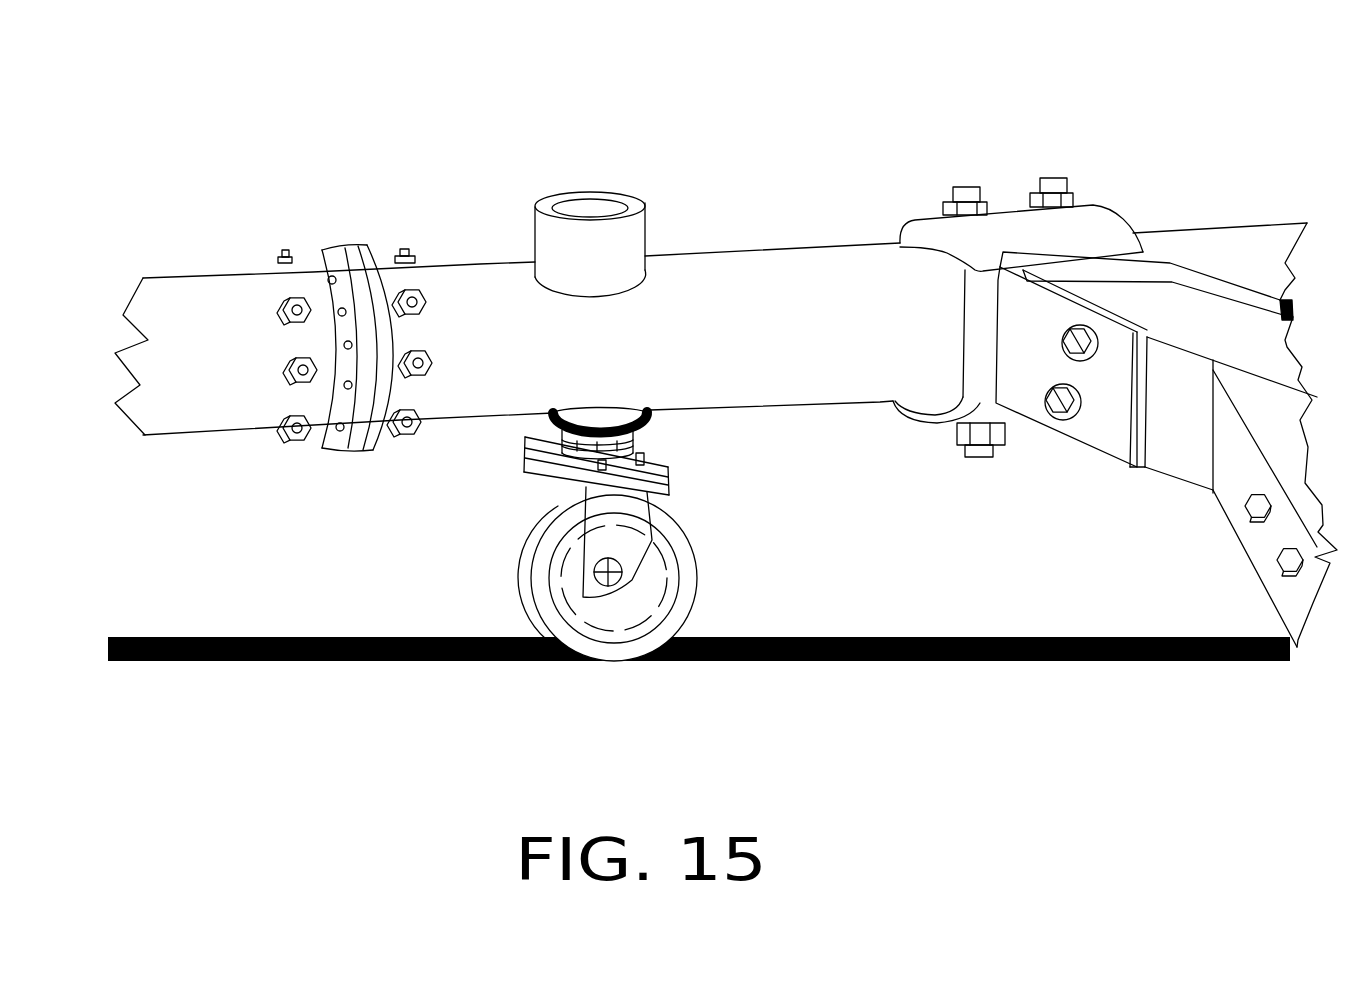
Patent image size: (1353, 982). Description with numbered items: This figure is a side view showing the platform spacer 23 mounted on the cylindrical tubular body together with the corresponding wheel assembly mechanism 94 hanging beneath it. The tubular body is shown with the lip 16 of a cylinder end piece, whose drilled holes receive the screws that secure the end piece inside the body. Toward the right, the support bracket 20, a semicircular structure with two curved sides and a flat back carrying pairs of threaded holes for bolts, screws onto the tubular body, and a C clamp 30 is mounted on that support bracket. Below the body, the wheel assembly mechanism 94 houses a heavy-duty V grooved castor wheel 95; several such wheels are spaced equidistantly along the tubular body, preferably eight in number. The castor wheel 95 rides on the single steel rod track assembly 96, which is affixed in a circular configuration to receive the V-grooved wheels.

The lip 16 is at (330, 262).
The support bracket 20 is at (1075, 232).
The platform spacer 23 is at (600, 242).
The C clamp 30 is at (1107, 420).
The wheel assembly mechanism 94 is at (562, 534).
The V grooved castor wheel 95 is at (532, 553).
The single steel rod track assembly 96 is at (1027, 662).